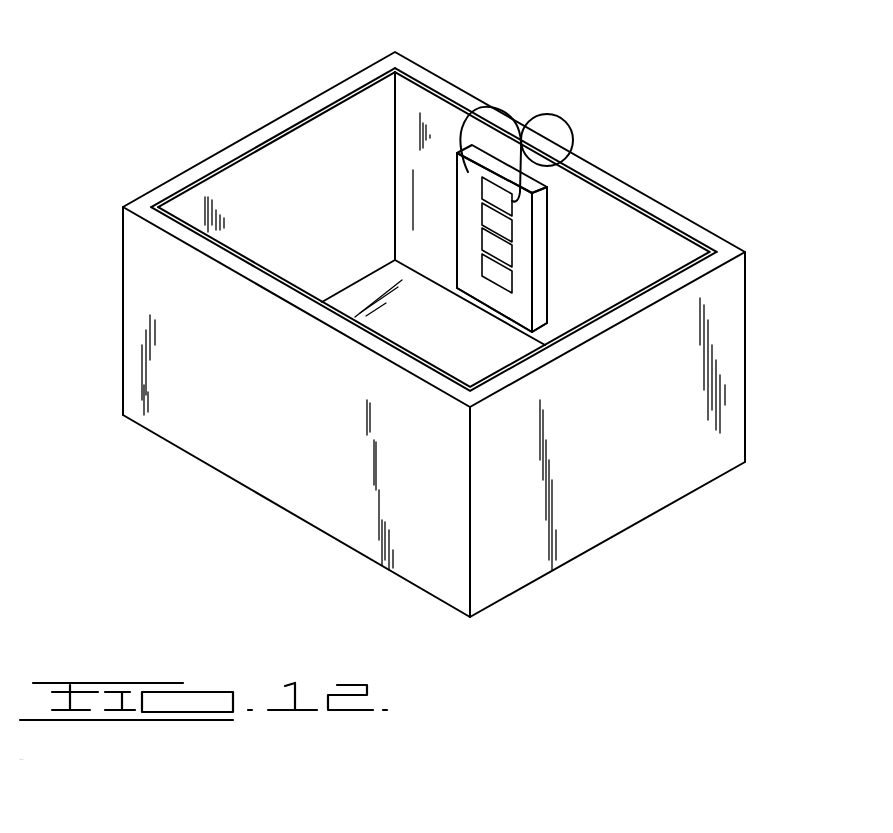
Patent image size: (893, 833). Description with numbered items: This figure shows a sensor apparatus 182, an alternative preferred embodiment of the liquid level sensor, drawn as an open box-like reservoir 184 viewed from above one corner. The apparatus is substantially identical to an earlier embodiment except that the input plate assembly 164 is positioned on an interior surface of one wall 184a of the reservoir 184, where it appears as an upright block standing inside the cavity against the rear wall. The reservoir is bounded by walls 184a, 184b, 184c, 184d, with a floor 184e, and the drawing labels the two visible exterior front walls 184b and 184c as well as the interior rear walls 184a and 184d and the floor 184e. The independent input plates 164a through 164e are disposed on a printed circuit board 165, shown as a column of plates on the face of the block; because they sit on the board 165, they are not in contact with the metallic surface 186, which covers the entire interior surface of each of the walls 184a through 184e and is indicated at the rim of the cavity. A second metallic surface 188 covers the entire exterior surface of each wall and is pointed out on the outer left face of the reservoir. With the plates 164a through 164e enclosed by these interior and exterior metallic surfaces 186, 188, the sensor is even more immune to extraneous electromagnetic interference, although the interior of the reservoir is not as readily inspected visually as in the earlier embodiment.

The sensor apparatus 182 is at (110, 152).
The reservoir 184 is at (607, 172).
The wall 184a is at (668, 253).
The wall 184b is at (608, 518).
The wall 184c is at (230, 454).
The wall 184d is at (230, 193).
The wall 184e is at (344, 285).
The metallic surface 186 is at (303, 146).
The metallic surface 188 is at (145, 279).
The input plate assembly 164 is at (443, 208).
The input plate 164a is at (503, 192).
The input plate 164e is at (489, 286).
The printed circuit board 165 is at (530, 262).